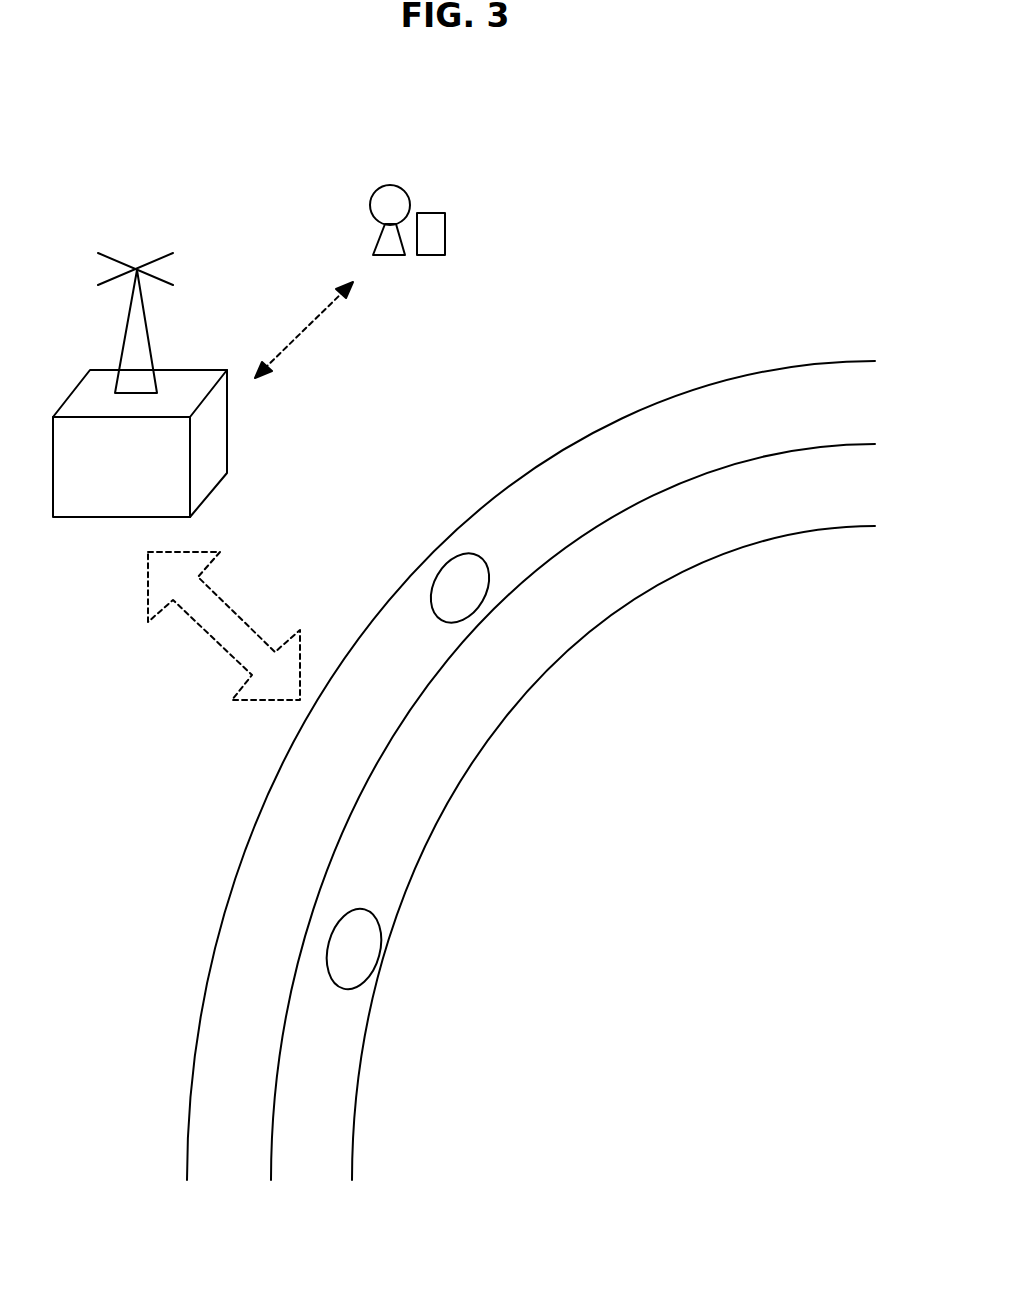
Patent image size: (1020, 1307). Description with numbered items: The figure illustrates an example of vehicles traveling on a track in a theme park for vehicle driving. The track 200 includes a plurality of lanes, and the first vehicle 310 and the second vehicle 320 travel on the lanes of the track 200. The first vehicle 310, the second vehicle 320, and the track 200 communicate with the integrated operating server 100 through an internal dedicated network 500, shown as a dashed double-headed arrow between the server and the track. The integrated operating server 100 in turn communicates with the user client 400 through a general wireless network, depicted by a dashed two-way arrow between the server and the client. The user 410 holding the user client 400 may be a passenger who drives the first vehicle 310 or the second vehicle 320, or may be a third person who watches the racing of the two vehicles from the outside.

The integrated operating server 100 is at (192, 465).
The track 200 is at (547, 685).
The first vehicle 310 is at (440, 568).
The second vehicle 320 is at (377, 955).
The user client 400 is at (432, 255).
The user 410 is at (368, 205).
The internal dedicated network 500 is at (224, 626).